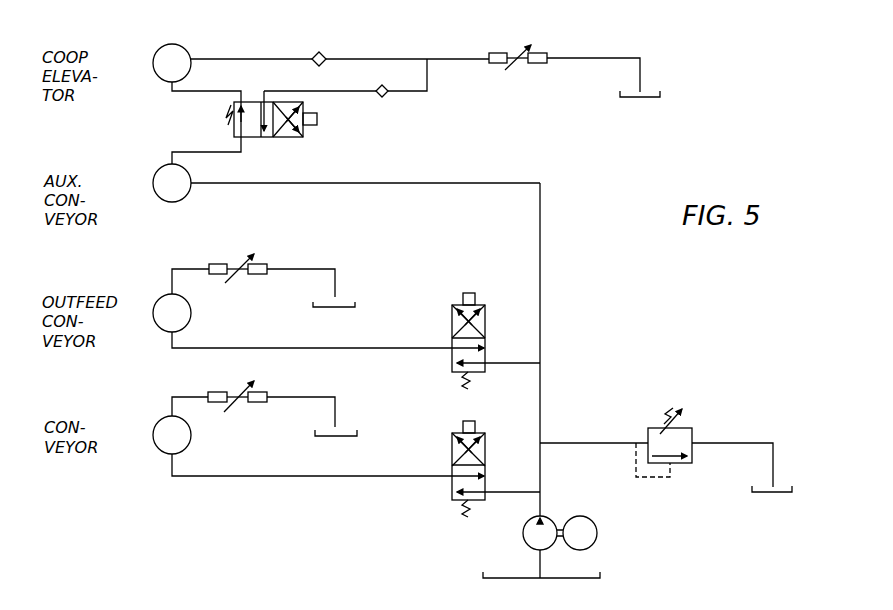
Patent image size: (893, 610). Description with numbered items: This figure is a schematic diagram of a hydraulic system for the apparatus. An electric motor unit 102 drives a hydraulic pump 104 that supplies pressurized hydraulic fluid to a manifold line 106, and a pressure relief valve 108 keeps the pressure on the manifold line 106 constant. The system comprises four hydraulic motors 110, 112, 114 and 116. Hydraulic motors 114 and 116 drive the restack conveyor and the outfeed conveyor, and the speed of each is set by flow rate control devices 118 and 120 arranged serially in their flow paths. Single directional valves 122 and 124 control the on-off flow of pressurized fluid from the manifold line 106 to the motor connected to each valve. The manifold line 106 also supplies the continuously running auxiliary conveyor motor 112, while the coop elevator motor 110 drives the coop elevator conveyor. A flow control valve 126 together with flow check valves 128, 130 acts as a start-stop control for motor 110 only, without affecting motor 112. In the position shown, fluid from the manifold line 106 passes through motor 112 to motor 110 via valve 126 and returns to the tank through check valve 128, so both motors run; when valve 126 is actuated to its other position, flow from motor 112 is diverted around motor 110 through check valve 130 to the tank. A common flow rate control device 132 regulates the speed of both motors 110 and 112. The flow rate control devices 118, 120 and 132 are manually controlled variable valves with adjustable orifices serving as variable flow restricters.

The electric motor unit 102 is at (597, 528).
The hydraulic pump 104 is at (523, 540).
The manifold line 106 is at (540, 290).
The pressure relief valve 108 is at (692, 430).
The coop elevator motor 110 is at (172, 44).
The auxiliary conveyor motor 112 is at (185, 196).
The hydraulic motor 114 is at (187, 321).
The hydraulic motor 116 is at (187, 443).
The flow rate control device 118 is at (238, 262).
The flow rate control device 120 is at (236, 393).
The single directional valve 122 is at (486, 335).
The single directional valve 124 is at (486, 462).
The flow control valve 126 is at (282, 138).
The flow check valve 128 is at (323, 55).
The flow check valve 130 is at (386, 96).
The flow rate control device 132 is at (516, 67).